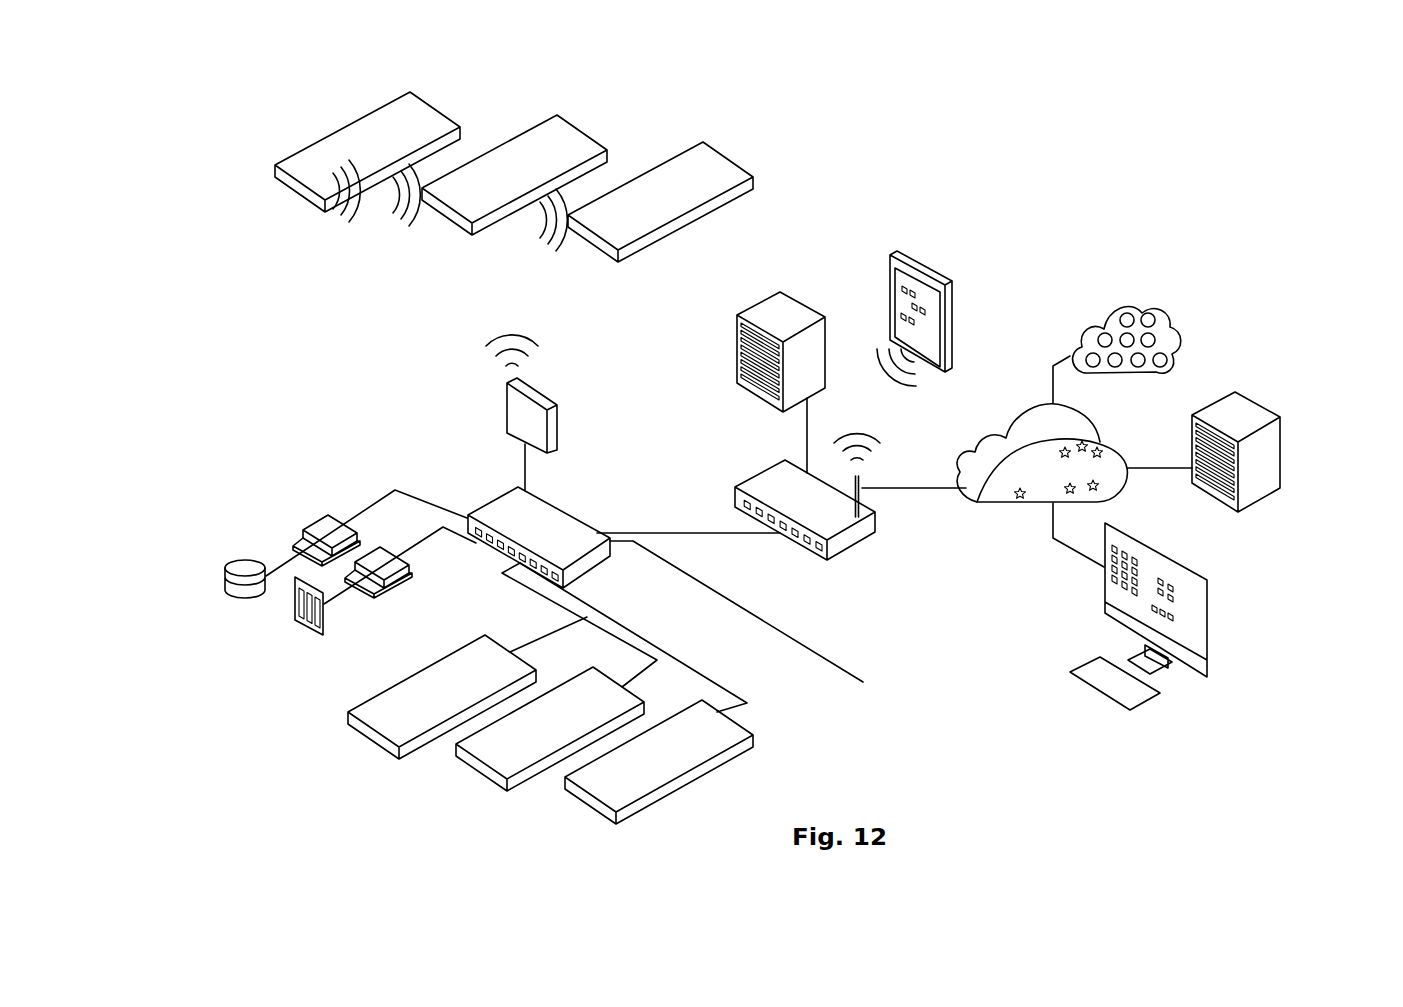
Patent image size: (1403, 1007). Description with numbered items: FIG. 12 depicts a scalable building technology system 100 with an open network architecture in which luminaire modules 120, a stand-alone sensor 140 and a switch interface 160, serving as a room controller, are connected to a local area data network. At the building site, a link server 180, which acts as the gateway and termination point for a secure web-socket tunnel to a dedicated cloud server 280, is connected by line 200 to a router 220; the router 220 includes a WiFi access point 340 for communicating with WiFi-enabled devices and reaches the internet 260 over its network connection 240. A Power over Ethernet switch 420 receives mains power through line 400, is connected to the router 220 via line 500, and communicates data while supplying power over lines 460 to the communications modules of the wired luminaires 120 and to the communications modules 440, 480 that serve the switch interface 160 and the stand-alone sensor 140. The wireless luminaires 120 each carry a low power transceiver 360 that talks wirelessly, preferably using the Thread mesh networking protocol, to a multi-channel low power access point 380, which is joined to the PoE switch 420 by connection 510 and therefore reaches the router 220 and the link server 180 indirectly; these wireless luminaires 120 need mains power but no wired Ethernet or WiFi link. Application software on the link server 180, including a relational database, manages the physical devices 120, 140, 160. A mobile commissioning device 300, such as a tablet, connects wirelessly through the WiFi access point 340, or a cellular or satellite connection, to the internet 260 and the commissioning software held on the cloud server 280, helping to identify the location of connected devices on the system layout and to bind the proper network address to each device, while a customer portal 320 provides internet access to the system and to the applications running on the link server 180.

The building technology system 100 is at (1068, 236).
The luminaire module 120 is at (400, 102).
The stand-alone sensor 140 is at (245, 563).
The switch interface 160 is at (297, 625).
The link server 180 is at (760, 303).
The line 200 is at (810, 423).
The router 220 is at (762, 473).
The connection to network/internet 240 is at (935, 488).
The internet 260 is at (1037, 505).
The cloud server 280 is at (1270, 413).
The mobile commissioning device 300 is at (890, 263).
The customer portal 320 is at (1203, 577).
The WiFi access point 340 is at (867, 476).
The low power transceiver 360 is at (535, 233).
The low power access point 380 is at (533, 392).
The line 400 is at (833, 665).
The Power over Ethernet switch 420 is at (560, 508).
The communications module 440 is at (392, 583).
The lines 460 is at (383, 492).
The communications module 480 is at (323, 525).
The line 500 is at (733, 537).
The connection between PoE switch and low power access point 510 is at (522, 467).